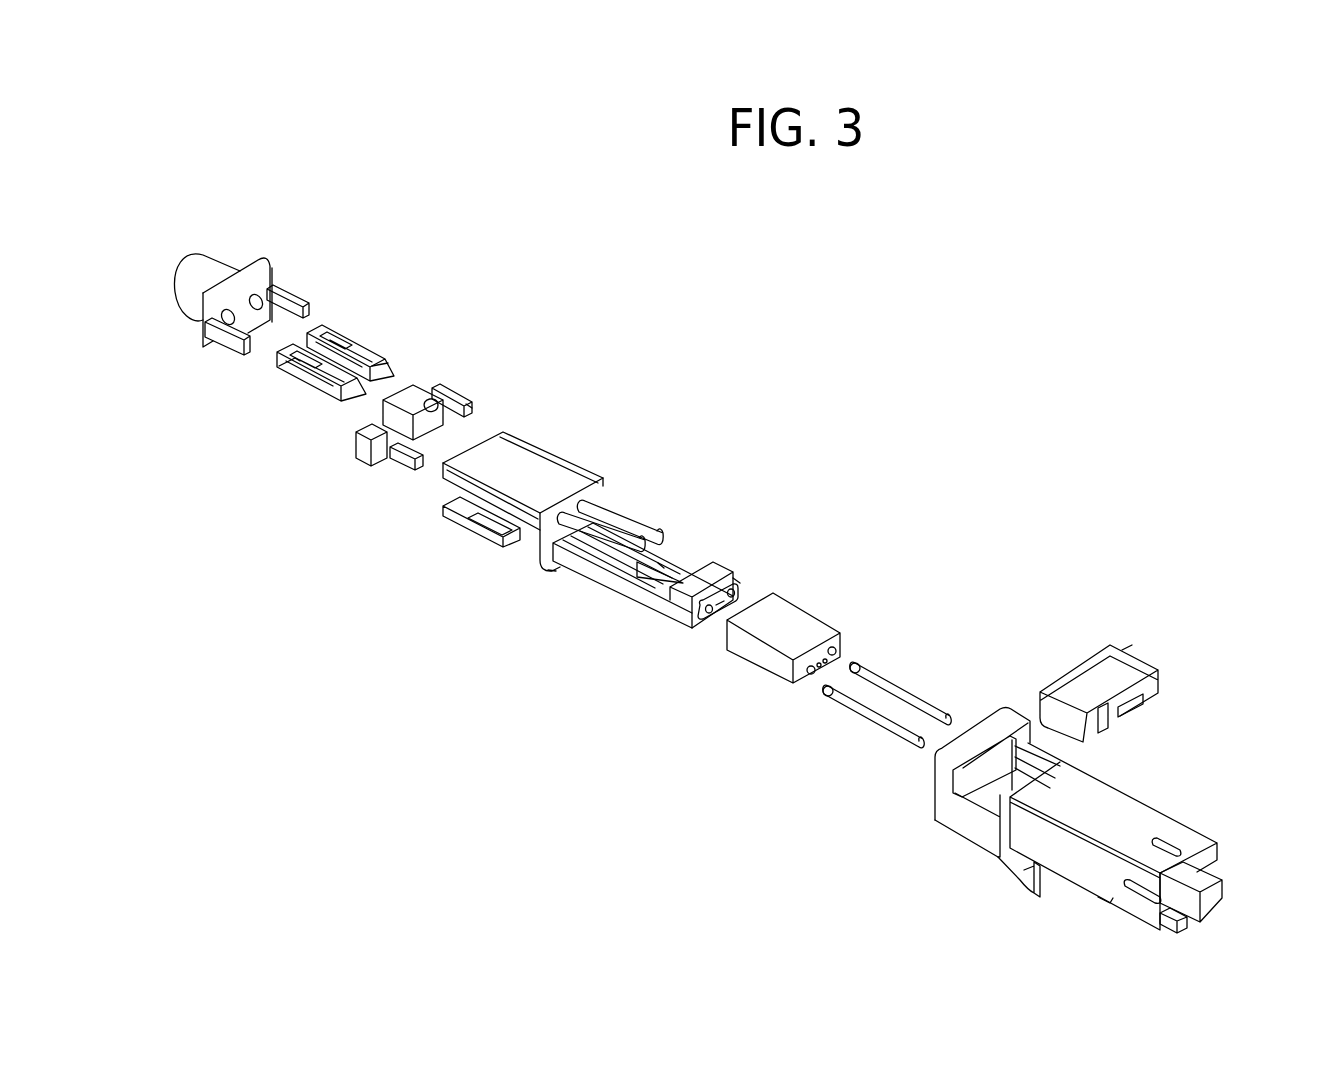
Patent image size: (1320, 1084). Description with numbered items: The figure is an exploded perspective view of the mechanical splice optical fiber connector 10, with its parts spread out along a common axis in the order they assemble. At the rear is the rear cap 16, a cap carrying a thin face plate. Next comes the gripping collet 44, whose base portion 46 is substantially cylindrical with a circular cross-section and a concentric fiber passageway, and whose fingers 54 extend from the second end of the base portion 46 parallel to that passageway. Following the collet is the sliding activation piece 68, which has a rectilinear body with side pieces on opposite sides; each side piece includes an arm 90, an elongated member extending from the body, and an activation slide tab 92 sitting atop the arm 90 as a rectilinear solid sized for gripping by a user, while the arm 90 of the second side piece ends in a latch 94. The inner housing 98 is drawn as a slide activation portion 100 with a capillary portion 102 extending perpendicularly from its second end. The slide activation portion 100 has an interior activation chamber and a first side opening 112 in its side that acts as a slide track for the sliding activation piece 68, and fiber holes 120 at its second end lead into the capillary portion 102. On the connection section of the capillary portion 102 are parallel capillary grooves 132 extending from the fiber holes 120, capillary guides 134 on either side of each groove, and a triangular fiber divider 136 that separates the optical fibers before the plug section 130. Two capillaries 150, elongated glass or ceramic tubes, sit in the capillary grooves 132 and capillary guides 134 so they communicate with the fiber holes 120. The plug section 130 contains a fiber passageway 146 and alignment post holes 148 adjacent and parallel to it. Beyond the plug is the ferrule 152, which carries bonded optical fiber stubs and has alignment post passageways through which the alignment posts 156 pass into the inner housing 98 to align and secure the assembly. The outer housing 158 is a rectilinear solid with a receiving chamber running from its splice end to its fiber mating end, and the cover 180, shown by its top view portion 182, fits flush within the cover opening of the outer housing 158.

The mechanical splice optical fiber connector 10 is at (967, 358).
The rear cap 16 is at (221, 250).
The gripping collet 44 is at (361, 346).
The base portion 46 is at (278, 367).
The fingers 54 is at (374, 362).
The sliding activation piece 68 is at (418, 388).
The arm 90 is at (438, 386).
The activation slide tab 92 is at (456, 415).
The latch 94 is at (477, 420).
The inner housing 98 is at (539, 571).
The slide activation portion 100 is at (538, 519).
The capillary portion 102 is at (688, 555).
The first side opening 112 is at (482, 514).
The fiber holes 120 is at (540, 540).
The plug section 130 is at (712, 572).
The capillary grooves 132 is at (630, 568).
The capillary guides 134 is at (580, 564).
The fiber divider 136 is at (662, 566).
The fiber passageway 146 is at (740, 592).
The alignment post holes 148 is at (707, 628).
The capillaries 150 is at (640, 542).
The ferrule 152 is at (798, 632).
The alignment posts 156 is at (908, 696).
The outer housing 158 is at (1134, 779).
The cover 180 is at (1127, 650).
The top view portion 182 is at (1098, 672).